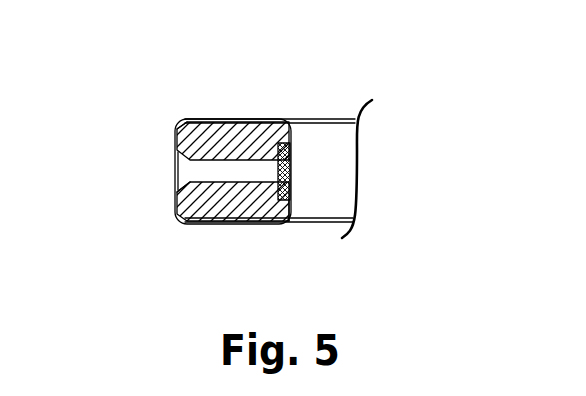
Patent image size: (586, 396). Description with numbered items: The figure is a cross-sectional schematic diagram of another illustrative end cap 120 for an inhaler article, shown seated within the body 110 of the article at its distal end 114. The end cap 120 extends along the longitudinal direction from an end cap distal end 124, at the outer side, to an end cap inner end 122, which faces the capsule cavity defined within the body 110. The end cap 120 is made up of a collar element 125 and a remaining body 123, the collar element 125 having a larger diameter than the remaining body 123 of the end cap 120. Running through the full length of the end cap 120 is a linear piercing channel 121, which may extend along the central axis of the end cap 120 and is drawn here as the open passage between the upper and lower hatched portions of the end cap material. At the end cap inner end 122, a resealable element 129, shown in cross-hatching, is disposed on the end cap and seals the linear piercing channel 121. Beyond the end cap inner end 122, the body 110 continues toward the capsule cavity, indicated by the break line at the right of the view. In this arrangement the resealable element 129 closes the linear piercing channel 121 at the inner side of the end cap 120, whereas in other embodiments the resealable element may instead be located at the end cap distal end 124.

The body 110 is at (348, 118).
The distal end 114 is at (195, 112).
The end cap 120 is at (247, 129).
The linear piercing channel 121 is at (168, 168).
The end cap inner end 122 is at (287, 203).
The remaining body of the end cap 123 is at (227, 218).
The end cap distal end 124 is at (175, 193).
The collar element 125 is at (182, 127).
The resealable element 129 is at (290, 162).